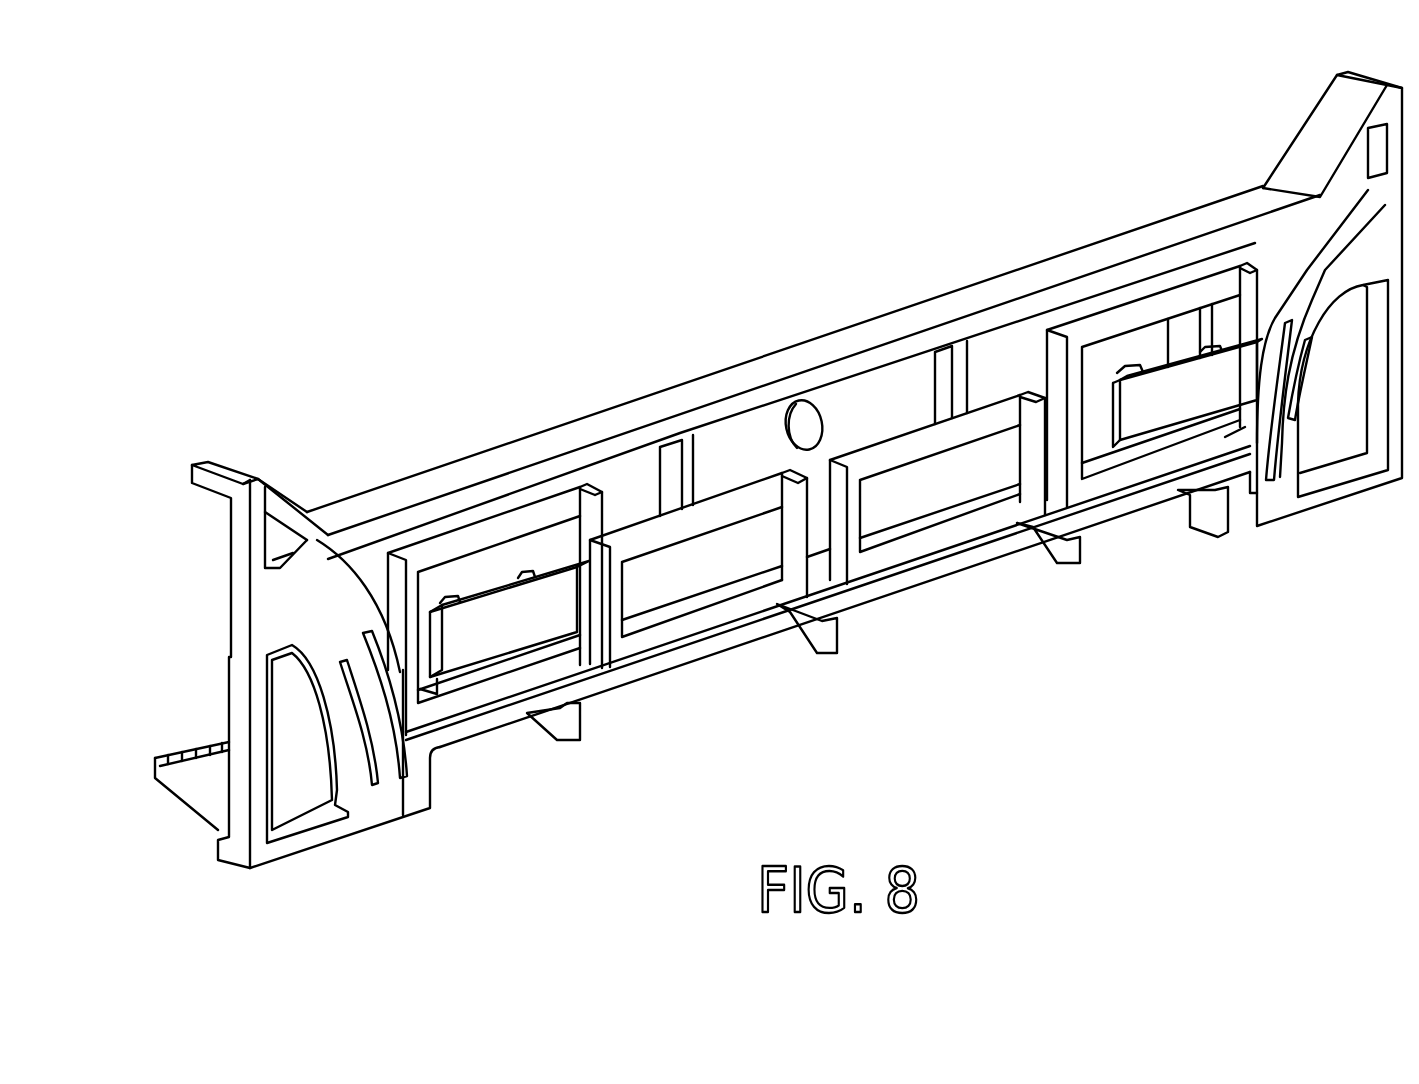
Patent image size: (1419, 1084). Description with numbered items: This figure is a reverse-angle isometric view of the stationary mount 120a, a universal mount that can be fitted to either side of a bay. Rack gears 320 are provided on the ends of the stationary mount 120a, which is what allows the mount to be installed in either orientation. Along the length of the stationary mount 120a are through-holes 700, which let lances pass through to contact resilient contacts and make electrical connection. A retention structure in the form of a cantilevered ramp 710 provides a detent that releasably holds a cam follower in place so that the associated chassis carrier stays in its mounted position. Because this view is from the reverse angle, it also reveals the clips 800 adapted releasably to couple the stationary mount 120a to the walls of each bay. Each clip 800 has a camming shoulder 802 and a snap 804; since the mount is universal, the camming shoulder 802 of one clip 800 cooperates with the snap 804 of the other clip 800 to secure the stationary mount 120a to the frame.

The stationary mount 120a is at (843, 347).
The rack gears 320 is at (166, 762).
The through-holes 700 is at (707, 563).
The cantilevered ramp 710 is at (375, 743).
The clips 800 is at (493, 630).
The camming shoulder 802 is at (438, 610).
The snap 804 is at (547, 571).